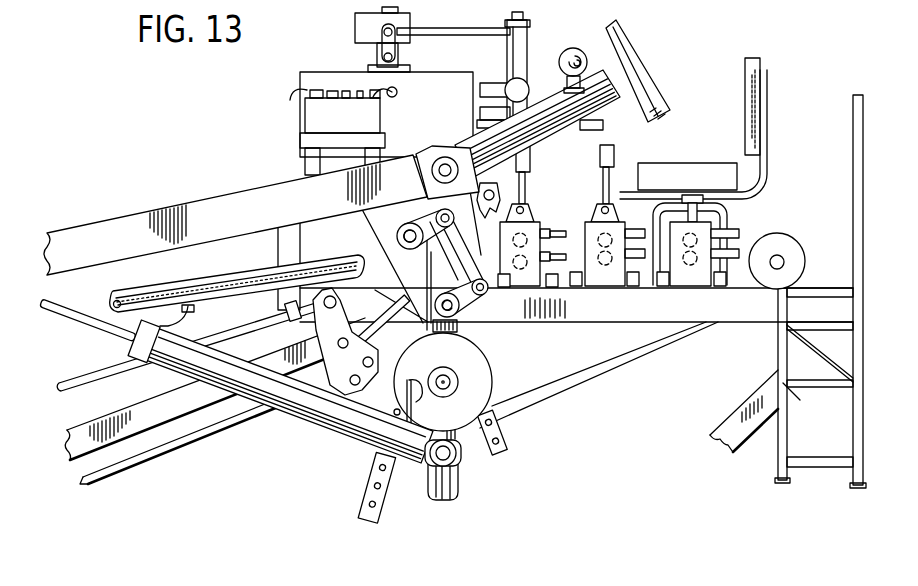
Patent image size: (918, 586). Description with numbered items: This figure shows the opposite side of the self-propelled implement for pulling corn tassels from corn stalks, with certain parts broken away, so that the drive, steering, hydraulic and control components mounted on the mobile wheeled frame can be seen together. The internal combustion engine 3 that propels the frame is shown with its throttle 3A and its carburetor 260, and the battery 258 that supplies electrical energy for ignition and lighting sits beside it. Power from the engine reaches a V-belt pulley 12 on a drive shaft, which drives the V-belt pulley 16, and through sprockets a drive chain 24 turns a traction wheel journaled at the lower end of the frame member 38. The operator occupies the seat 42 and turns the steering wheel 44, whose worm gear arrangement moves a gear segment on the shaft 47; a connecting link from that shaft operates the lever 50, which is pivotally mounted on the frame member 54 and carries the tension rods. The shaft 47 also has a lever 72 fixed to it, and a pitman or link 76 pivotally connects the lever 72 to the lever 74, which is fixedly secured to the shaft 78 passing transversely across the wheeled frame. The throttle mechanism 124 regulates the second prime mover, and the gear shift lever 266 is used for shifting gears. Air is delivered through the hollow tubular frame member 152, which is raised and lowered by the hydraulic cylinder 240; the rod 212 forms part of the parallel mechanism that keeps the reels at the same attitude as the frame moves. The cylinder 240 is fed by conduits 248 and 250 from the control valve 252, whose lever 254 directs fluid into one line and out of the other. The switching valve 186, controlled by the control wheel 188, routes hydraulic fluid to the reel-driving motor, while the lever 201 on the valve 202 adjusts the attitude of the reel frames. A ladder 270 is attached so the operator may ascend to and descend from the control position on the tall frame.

The internal combustion engine 3 is at (330, 74).
The throttle 3A is at (498, 80).
The V-belt pulley 12 is at (790, 248).
The V-belt pulley 16 is at (474, 373).
The drive chain 24 is at (505, 433).
The frame member 38 is at (462, 483).
The seat 42 is at (693, 167).
The steering wheel 44 is at (648, 73).
The shaft 47 is at (397, 243).
The lever 50 is at (383, 442).
The frame member 54 is at (175, 405).
The lever 72 is at (431, 252).
The lever 74 is at (473, 305).
The pitman or link 76 is at (444, 249).
The shaft 78 is at (470, 318).
The throttle mechanism 124 is at (477, 123).
The hollow tubular frame member 152 is at (203, 200).
The switching valve 186 is at (700, 288).
The control wheel 188 is at (702, 199).
The lever 201 is at (615, 160).
The valve 202 is at (607, 288).
The rod 212 is at (245, 282).
The hydraulic cylinder 240 is at (318, 418).
The conduit 248 is at (428, 402).
The conduit 250 is at (168, 322).
The control valve 252 is at (535, 222).
The lever 254 is at (531, 165).
The battery 258 is at (312, 125).
The carburetor 260 is at (356, 26).
The gear shift lever 266 is at (576, 38).
The ladder 270 is at (779, 461).